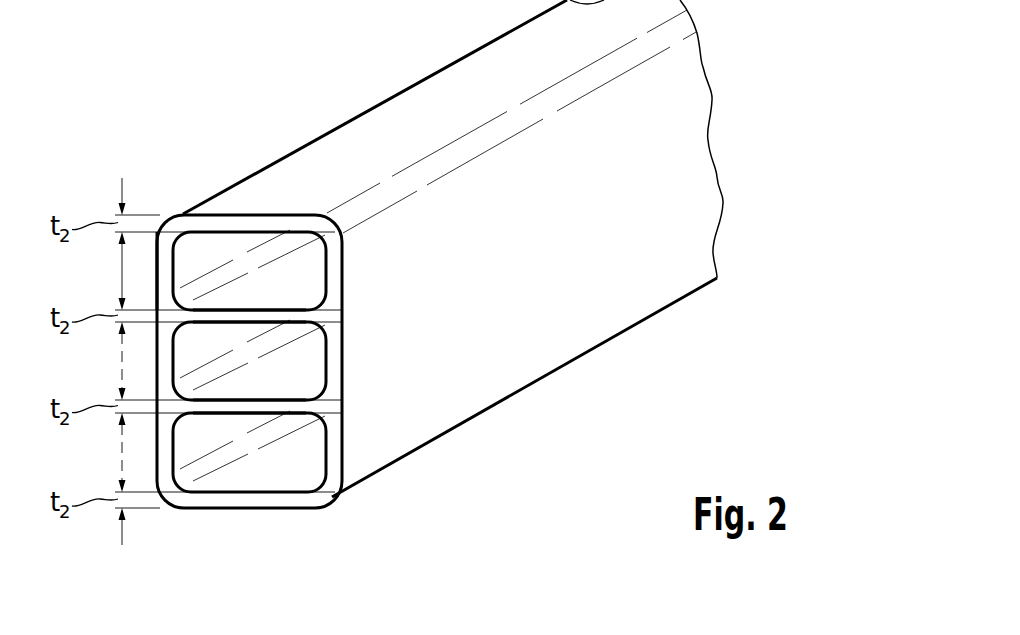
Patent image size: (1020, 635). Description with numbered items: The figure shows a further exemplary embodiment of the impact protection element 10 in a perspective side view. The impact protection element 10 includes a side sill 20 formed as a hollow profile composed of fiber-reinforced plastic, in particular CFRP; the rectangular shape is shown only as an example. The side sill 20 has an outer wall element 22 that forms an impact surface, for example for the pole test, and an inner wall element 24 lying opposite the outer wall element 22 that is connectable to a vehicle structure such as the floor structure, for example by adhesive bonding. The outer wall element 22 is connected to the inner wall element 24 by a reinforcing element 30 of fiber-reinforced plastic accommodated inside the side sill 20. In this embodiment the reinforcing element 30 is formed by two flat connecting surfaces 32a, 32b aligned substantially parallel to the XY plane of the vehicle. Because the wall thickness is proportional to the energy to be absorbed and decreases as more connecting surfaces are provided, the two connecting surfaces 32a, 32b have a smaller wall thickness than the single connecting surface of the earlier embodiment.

The impact protection element 10 is at (257, 116).
The side sill 20 is at (397, 114).
The outer wall element 22 is at (657, 295).
The inner wall element 24 is at (157, 262).
The reinforcing element 30 is at (243, 290).
The connecting surface 32a is at (278, 404).
The connecting surface 32b is at (277, 316).